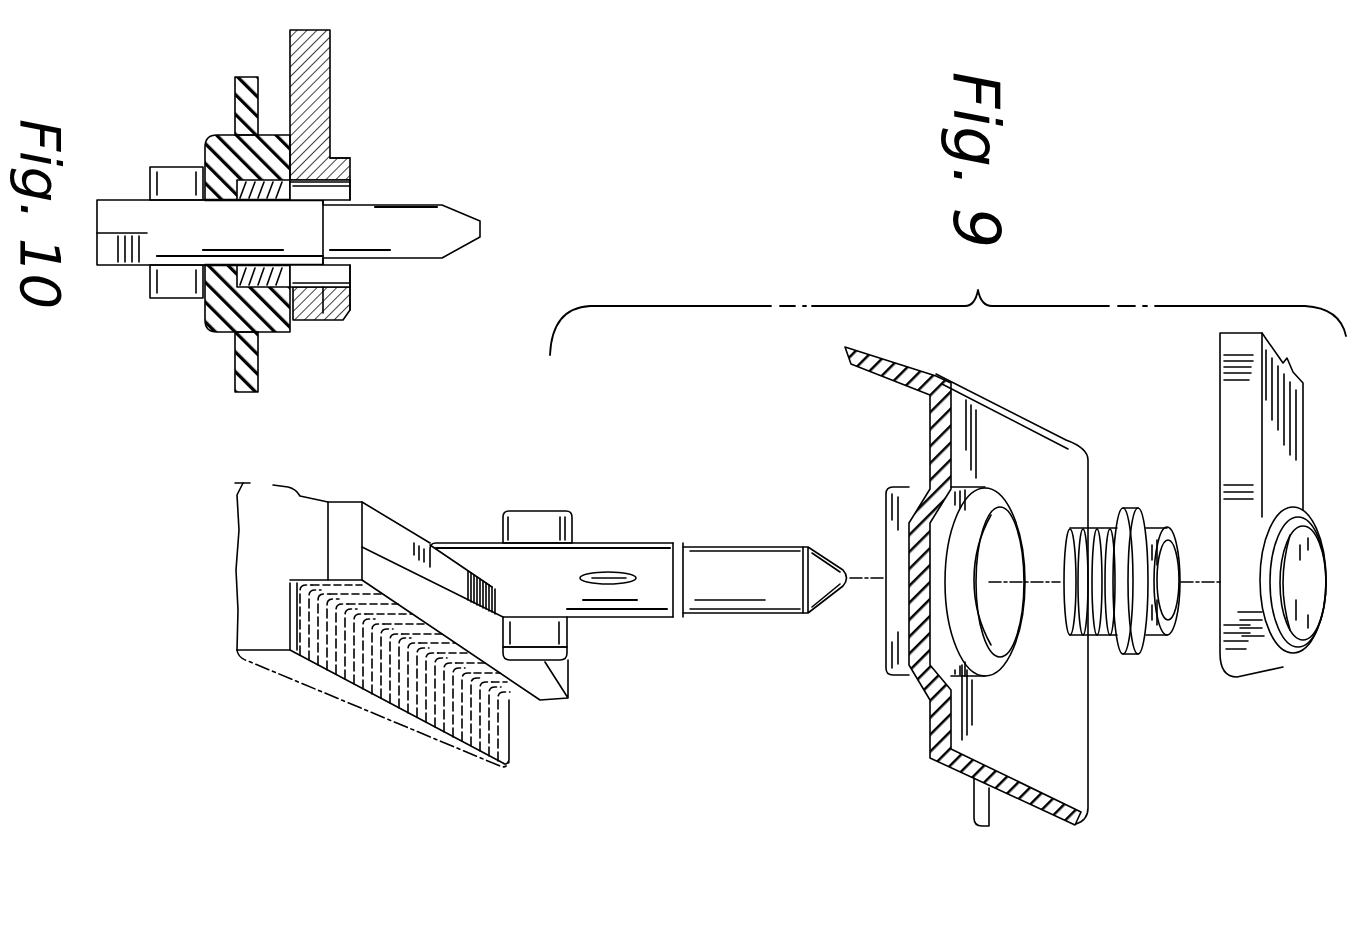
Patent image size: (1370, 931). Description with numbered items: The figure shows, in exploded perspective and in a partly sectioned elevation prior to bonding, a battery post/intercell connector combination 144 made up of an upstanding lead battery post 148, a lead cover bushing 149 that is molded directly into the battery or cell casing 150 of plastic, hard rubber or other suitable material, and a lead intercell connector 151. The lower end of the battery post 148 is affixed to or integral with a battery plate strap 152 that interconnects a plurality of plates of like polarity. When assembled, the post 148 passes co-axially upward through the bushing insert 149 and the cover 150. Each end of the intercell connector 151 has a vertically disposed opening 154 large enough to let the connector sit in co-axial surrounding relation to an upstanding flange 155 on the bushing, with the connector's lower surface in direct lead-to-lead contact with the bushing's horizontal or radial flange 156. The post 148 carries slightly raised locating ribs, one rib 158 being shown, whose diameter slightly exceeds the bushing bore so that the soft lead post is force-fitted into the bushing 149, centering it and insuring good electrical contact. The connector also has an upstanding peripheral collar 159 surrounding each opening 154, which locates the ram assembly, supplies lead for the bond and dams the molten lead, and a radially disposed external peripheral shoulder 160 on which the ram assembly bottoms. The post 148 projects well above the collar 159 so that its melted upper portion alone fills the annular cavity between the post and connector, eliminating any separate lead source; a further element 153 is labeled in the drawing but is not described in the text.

In FIG. 10, the battery post/intercell connector combination 144 is at (447, 193).
In FIG. 9, the battery post/intercell connector combination 144 is at (650, 438).
In FIG. 10, the battery post 148 is at (403, 258).
In FIG. 9, the battery post 148 is at (655, 619).
In FIG. 10, the cover bushing 149 is at (203, 167).
In FIG. 9, the cover bushing 149 is at (1140, 644).
In FIG. 10, the battery or cell casing 150 is at (258, 352).
In FIG. 9, the battery or cell casing 150 is at (1085, 818).
In FIG. 10, the intercell connector 151 is at (335, 315).
In FIG. 9, the intercell connector 151 is at (1266, 667).
In FIG. 10, the battery plate strap 152 is at (305, 320).
In FIG. 9, the battery plate strap 152 is at (390, 523).
In FIG. 10, the threaded bushing 153 is at (352, 285).
In FIG. 9, the threaded bushing 153 is at (1053, 581).
In FIG. 10, the opening 154 is at (352, 183).
In FIG. 9, the opening 154 is at (1305, 613).
In FIG. 9, the upstanding flange 155 is at (1168, 628).
In FIG. 9, the horizontal or radial flange 156 is at (1141, 518).
In FIG. 9, the locating rib 158 is at (596, 572).
In FIG. 10, the upstanding peripheral collar 159 is at (358, 158).
In FIG. 9, the upstanding peripheral collar 159 is at (1321, 543).
In FIG. 10, the external peripheral shoulder 160 is at (335, 140).
In FIG. 9, the external peripheral shoulder 160 is at (1280, 510).